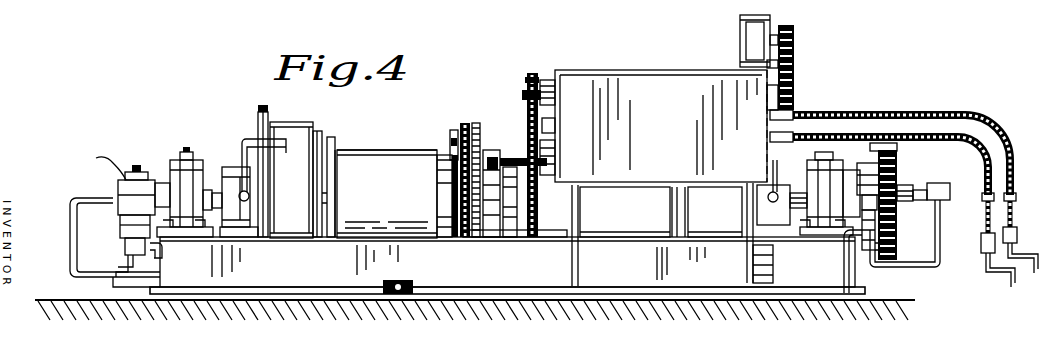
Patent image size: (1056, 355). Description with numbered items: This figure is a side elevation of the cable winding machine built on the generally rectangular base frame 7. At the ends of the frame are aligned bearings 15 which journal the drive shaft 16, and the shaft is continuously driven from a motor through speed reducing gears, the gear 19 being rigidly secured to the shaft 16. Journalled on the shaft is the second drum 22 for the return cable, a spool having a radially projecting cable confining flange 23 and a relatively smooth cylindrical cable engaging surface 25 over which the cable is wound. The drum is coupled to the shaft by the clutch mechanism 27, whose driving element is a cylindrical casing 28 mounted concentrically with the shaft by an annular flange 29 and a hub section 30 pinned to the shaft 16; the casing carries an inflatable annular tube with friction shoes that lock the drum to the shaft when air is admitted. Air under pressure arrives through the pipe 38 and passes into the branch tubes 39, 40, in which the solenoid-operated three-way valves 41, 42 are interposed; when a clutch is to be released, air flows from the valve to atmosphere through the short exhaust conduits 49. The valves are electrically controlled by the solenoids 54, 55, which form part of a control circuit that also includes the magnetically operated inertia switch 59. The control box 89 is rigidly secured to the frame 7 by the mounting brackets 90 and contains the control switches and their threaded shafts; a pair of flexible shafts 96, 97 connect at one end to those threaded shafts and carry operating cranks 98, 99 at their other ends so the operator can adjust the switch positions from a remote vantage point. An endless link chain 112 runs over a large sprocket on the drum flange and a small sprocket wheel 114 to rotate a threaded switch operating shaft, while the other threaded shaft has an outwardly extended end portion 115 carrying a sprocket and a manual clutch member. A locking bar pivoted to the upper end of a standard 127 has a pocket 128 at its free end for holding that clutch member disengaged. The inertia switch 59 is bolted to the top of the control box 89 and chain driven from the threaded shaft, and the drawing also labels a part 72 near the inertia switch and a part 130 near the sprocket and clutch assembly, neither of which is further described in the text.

The base frame 7 is at (622, 271).
The bearings 15 is at (186, 160).
The drive shaft 16 is at (223, 167).
The speed reducing gear 19 is at (898, 137).
The second drum 22 is at (371, 148).
The cable confining flange 23 is at (334, 140).
The cable engaging surface 25 is at (364, 200).
The clutch mechanism 27 is at (307, 121).
The cylindrical casing 28 is at (280, 195).
The annular flange 29 is at (265, 105).
The hub section 30 is at (240, 238).
The pipe 38 is at (250, 136).
The branch tube 39 is at (943, 215).
The branch tube 40 is at (72, 223).
The solenoid-operated valve 41 is at (857, 260).
The solenoid-operated valve 42 is at (140, 247).
The exhaust conduit 49 is at (162, 252).
The solenoid 54 is at (897, 172).
The solenoid 55 is at (123, 183).
The magnetically operated inertia switch 59 is at (748, 28).
The gear 72 is at (753, 47).
The control box 89 is at (661, 178).
The mounting bracket 90 is at (653, 224).
The flexible shaft 96 is at (972, 130).
The flexible shaft 97 is at (883, 111).
The operating crank 98 is at (1003, 280).
The operating crank 99 is at (1027, 247).
The endless link chain 112 is at (527, 114).
The small sprocket wheel 114 is at (530, 73).
The outwardly extended end portion 115 is at (515, 151).
The standard 127 is at (437, 207).
The pocket 128 is at (455, 128).
The gear train 130 is at (465, 240).